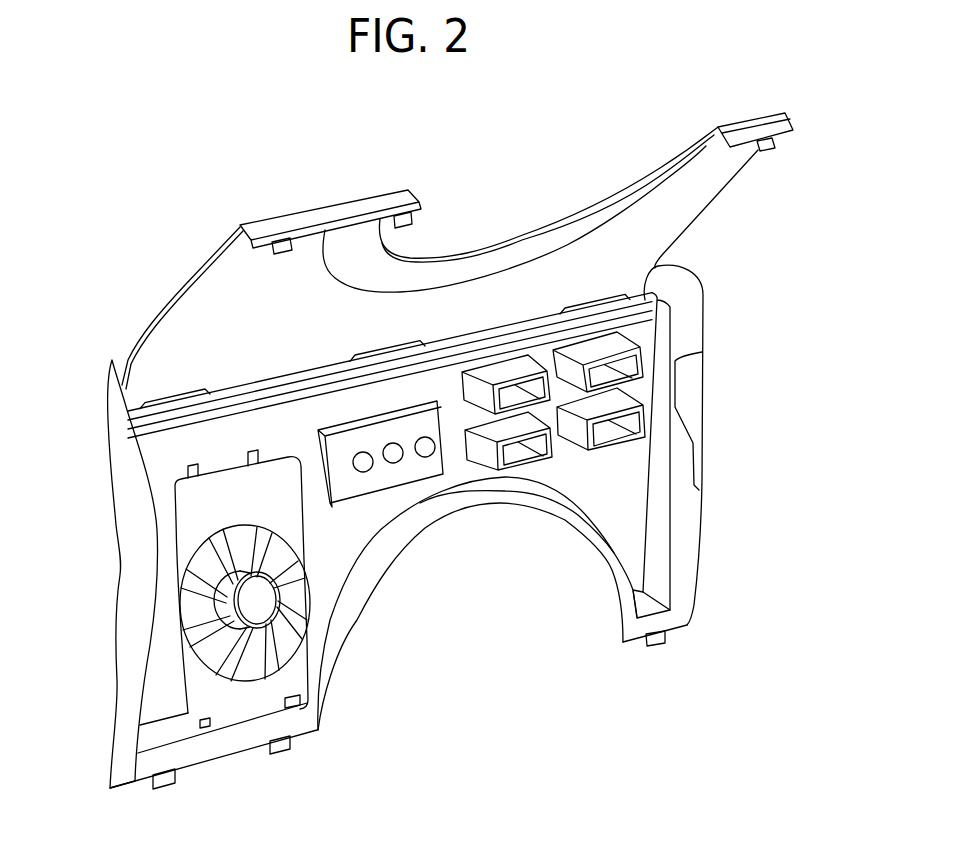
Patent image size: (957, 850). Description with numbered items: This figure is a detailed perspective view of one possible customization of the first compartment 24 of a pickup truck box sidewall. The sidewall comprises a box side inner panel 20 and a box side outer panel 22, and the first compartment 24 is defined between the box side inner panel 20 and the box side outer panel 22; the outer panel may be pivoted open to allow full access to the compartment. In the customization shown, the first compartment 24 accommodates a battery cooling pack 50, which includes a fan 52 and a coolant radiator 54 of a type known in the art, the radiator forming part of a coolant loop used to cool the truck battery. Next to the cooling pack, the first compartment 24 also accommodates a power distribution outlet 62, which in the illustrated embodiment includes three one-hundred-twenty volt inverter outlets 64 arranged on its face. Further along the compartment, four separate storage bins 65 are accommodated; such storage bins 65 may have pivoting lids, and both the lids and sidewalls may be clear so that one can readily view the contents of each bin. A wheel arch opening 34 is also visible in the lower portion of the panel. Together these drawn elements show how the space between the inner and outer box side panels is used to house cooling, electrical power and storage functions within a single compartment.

The box side inner panel 20 is at (632, 547).
The box side outer panel 22 is at (207, 318).
The first compartment 24 is at (654, 524).
The wheel arch 34 is at (483, 507).
The battery cooling pack 50 is at (169, 649).
The fan 52 is at (257, 610).
The coolant radiator 54 is at (203, 652).
The power distribution outlet 62 is at (350, 487).
The 120 volt inverter outlets 64 is at (367, 471).
The storage bins 65 is at (598, 352).